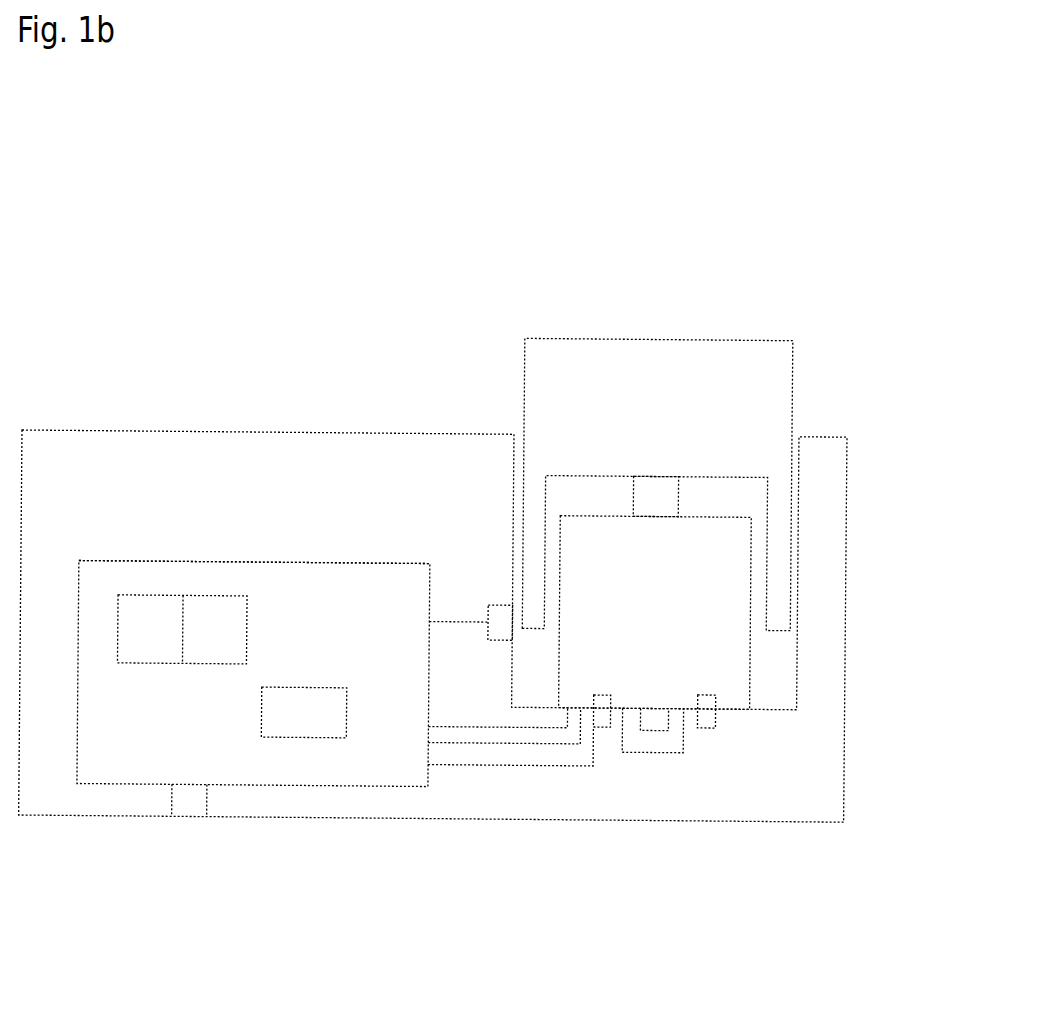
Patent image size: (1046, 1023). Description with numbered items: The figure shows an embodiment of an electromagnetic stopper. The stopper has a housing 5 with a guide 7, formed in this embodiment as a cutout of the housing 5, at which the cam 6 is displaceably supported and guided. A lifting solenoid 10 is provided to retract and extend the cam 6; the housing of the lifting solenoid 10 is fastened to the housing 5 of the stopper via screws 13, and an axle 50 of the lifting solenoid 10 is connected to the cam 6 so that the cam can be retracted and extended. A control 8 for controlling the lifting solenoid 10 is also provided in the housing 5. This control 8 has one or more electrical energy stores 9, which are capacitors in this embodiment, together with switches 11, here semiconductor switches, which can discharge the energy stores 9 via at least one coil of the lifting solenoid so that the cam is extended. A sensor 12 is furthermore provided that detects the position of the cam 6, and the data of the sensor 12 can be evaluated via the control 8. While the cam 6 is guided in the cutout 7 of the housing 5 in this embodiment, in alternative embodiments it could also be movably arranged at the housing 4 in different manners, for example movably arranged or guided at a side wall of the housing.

The housing 4 is at (459, 565).
The housing 5 is at (282, 450).
The cam 6 is at (599, 350).
The guide 7 is at (799, 498).
The control 8 is at (337, 560).
The electrical energy stores 9 is at (230, 630).
The lifting solenoid 10 is at (648, 599).
The switches 11 is at (308, 698).
The sensor 12 is at (504, 613).
The screws 13 is at (718, 722).
The axle 50 is at (656, 488).